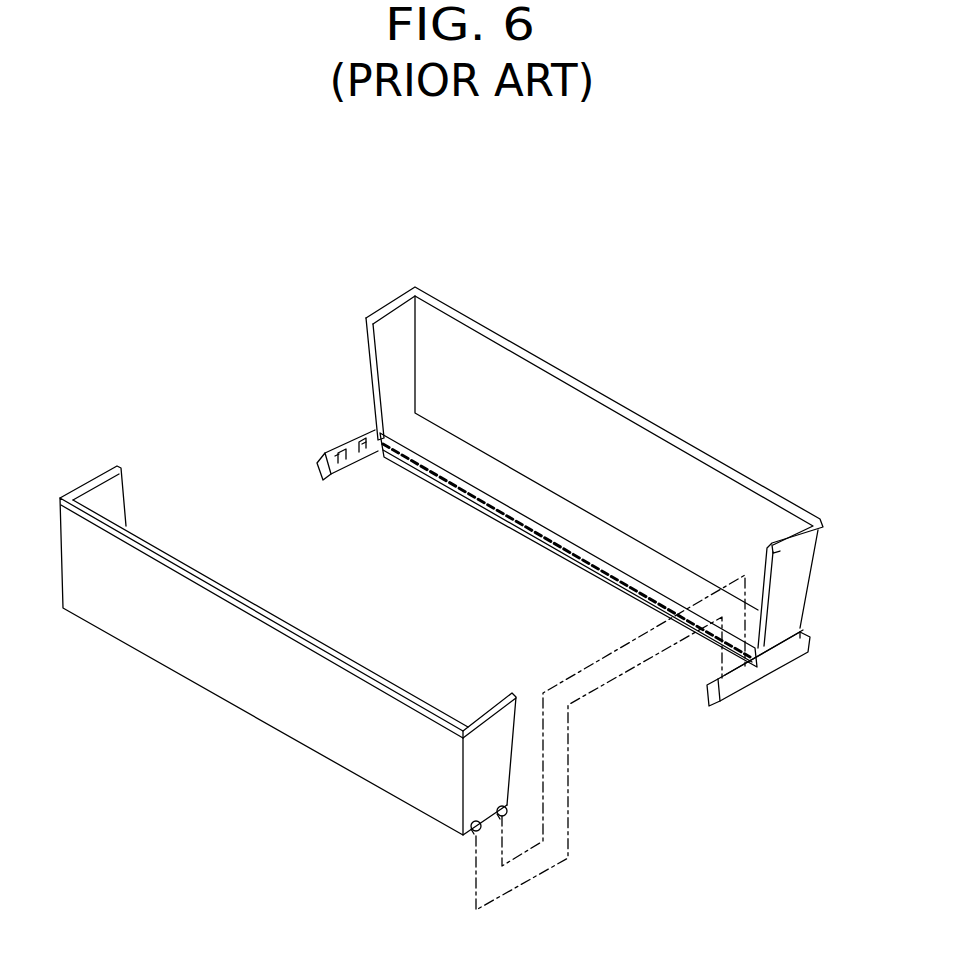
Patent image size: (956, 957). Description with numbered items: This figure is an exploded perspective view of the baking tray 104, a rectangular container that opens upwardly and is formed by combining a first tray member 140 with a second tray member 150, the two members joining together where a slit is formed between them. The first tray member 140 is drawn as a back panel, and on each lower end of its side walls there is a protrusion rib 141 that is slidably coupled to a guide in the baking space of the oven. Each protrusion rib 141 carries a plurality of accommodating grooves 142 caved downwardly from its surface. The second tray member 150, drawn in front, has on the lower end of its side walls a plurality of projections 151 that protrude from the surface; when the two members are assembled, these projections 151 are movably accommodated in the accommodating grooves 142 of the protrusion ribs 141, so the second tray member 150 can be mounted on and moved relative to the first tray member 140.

The baking tray 104 is at (305, 264).
The first tray member 140 is at (382, 305).
The protrusion rib 141 is at (750, 673).
The accommodating groove 142 is at (371, 456).
The second tray member 150 is at (92, 478).
The projection 151 is at (503, 812).